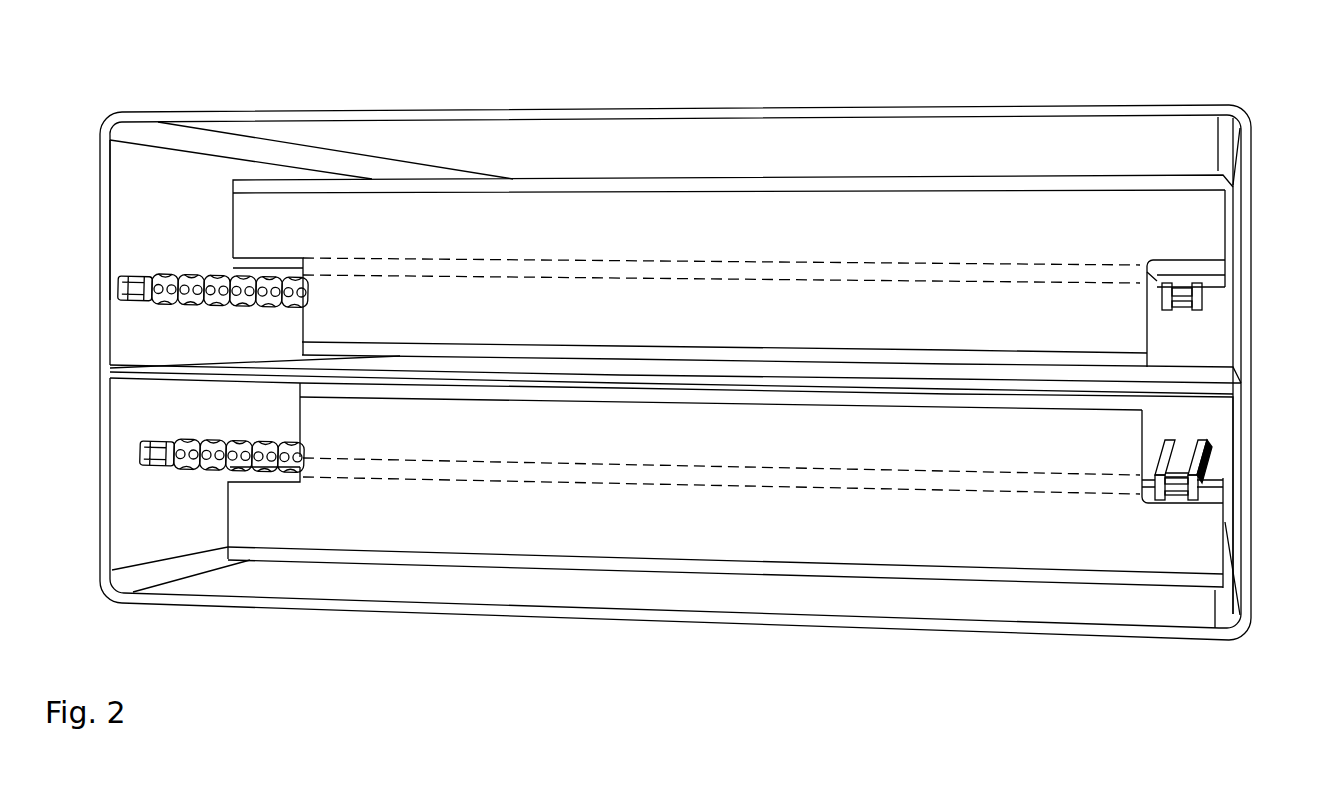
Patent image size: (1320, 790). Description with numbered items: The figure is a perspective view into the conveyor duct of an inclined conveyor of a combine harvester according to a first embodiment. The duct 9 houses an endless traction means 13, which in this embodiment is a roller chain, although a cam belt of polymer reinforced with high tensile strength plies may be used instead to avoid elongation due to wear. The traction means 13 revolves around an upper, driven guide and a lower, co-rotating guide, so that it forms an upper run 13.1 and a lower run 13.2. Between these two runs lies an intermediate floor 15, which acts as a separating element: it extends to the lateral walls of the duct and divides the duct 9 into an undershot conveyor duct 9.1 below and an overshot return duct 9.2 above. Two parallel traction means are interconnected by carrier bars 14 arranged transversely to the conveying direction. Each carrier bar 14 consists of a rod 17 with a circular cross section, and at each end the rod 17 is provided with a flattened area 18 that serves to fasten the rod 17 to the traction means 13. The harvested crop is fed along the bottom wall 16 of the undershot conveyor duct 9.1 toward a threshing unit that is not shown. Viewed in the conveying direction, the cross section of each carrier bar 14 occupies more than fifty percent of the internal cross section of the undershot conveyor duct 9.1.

The duct 9 is at (1113, 112).
The undershot conveyor duct 9.1 is at (125, 543).
The overshot return duct 9.2 is at (135, 224).
The traction means 13 is at (1190, 297).
The upper run 13.1 is at (120, 287).
The lower run 13.2 is at (145, 456).
The carrier bar 14 is at (744, 252).
The intermediate floor 15 is at (150, 370).
The bottom wall 16 is at (692, 602).
The rod 17 is at (568, 268).
The flattened area 18 is at (1215, 488).